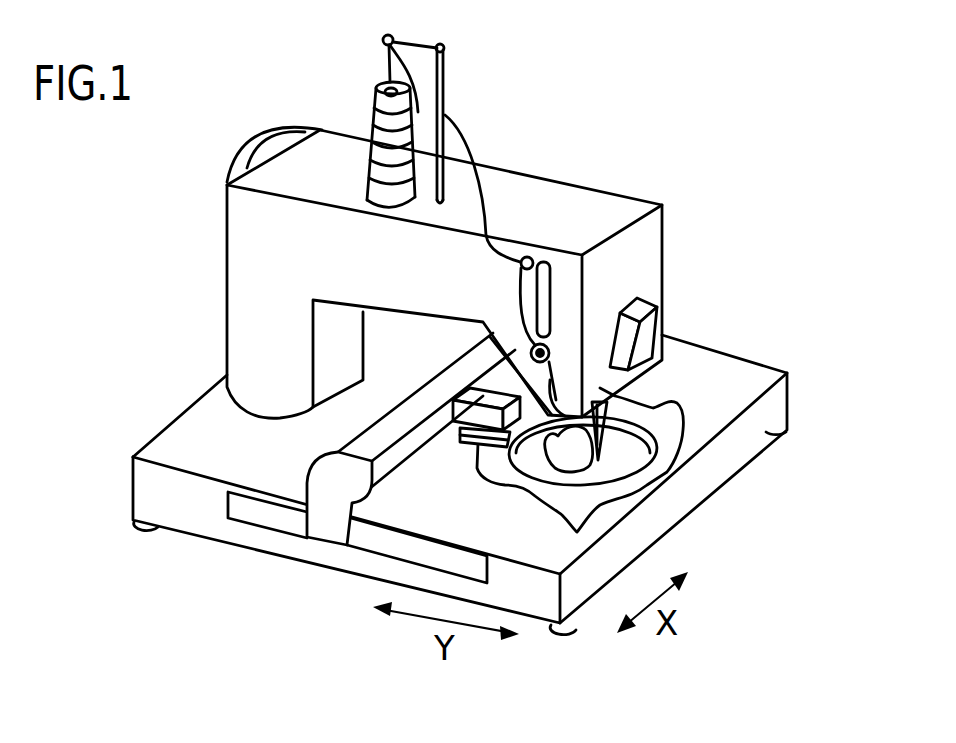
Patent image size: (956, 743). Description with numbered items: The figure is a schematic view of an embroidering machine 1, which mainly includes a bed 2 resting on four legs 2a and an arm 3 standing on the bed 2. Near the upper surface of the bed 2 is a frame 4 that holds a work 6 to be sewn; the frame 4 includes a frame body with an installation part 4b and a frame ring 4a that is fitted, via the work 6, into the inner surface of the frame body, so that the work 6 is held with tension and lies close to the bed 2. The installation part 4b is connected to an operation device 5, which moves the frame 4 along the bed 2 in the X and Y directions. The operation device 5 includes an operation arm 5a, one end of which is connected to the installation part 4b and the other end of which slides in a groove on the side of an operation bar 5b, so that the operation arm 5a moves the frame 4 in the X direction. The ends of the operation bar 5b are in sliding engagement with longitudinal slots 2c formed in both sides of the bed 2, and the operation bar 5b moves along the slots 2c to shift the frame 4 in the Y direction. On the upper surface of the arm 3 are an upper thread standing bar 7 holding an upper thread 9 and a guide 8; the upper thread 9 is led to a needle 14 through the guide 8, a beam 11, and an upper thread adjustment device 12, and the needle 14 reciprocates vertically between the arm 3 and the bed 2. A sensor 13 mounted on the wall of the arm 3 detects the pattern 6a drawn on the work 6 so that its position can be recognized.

The embroidering machine 1 is at (195, 289).
The bed 2 is at (167, 437).
The legs 2a is at (134, 530).
The longitudinal slots 2c is at (226, 494).
The arm 3 is at (243, 240).
The frame 4 is at (486, 452).
The frame ring 4a is at (684, 406).
The installation part 4b is at (447, 425).
The operation device 5 is at (248, 636).
The operation arm 5a is at (383, 507).
The operation bar 5b is at (310, 494).
The work 6 is at (665, 422).
The pattern 6a is at (650, 470).
The upper thread standing bar 7 is at (386, 82).
The guide 8 is at (444, 87).
The upper thread 9 is at (372, 123).
The beam 11 is at (534, 260).
The upper thread adjustment device 12 is at (550, 382).
The sensor 13 is at (613, 393).
The needle 14 is at (593, 466).